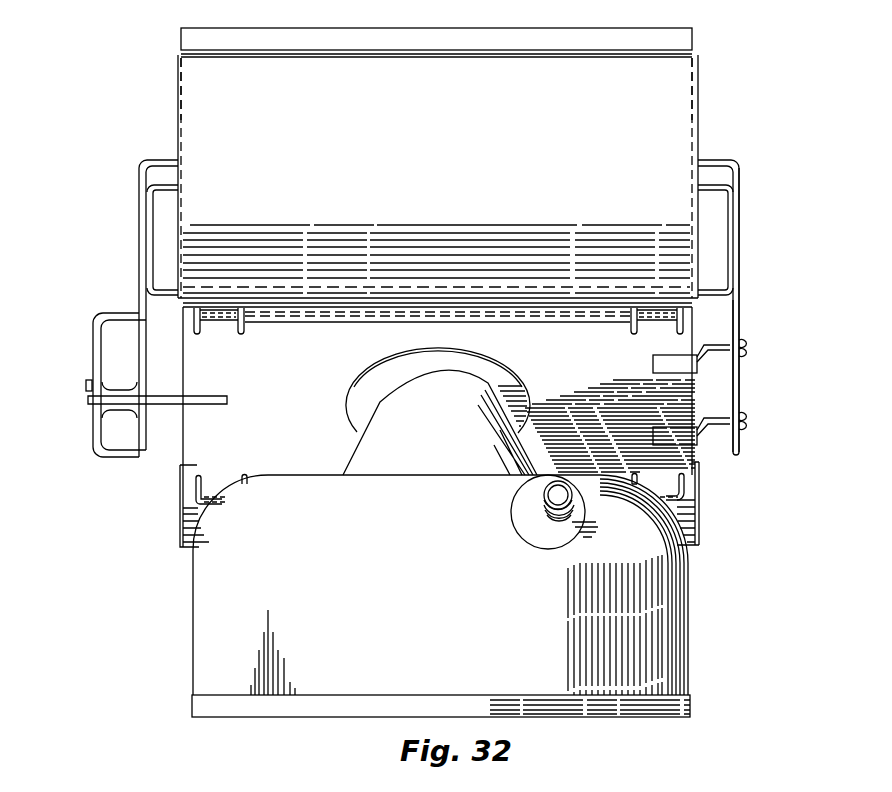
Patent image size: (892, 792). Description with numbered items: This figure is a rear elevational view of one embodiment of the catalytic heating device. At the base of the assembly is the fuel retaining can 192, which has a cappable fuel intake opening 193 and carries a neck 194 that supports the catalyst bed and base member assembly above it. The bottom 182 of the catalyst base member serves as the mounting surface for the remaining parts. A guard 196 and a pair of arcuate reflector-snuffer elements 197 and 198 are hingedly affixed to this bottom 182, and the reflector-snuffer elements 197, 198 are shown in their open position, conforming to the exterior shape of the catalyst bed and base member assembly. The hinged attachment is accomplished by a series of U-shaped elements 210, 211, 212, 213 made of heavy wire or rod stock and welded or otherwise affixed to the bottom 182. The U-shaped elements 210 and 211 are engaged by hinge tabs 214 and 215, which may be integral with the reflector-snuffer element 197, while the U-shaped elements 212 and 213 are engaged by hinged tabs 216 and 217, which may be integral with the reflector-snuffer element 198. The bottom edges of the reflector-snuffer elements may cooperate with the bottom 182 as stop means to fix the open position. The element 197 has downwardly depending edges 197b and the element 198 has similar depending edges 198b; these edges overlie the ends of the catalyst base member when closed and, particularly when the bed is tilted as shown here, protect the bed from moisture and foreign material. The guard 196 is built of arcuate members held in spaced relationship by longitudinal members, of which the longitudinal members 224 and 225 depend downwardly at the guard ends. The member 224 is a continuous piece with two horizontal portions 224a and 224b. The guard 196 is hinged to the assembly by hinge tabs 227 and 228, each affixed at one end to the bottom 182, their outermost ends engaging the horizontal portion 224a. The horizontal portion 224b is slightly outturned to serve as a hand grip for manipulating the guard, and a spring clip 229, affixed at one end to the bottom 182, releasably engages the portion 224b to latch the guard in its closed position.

The bottom of the catalyst base member 182 is at (297, 393).
The fuel retaining can 192 is at (387, 605).
The cappable fuel intake opening 193 is at (540, 503).
The neck 194 is at (432, 447).
The guard 196 is at (742, 172).
The reflector-snuffer element 197 is at (443, 37).
The downwardly depending edges 197b is at (177, 96).
The reflector-snuffer element 198 is at (700, 511).
The depending edges 198b is at (180, 519).
The U-shaped element 210 is at (244, 330).
The U-shaped element 211 is at (631, 327).
The U-shaped element 212 is at (198, 477).
The U-shaped element 213 is at (638, 478).
The hinge tab 214 is at (206, 330).
The hinge tab 215 is at (650, 320).
The hinged tab 216 is at (216, 496).
The hinged tab 217 is at (667, 496).
The longitudinal member 224 is at (138, 200).
The horizontal portion 224a is at (740, 388).
The horizontal portion 224b is at (93, 343).
The longitudinal member 225 is at (162, 191).
The hinge tab 227 is at (653, 370).
The hinge tab 228 is at (655, 436).
The spring clip 229 is at (163, 405).